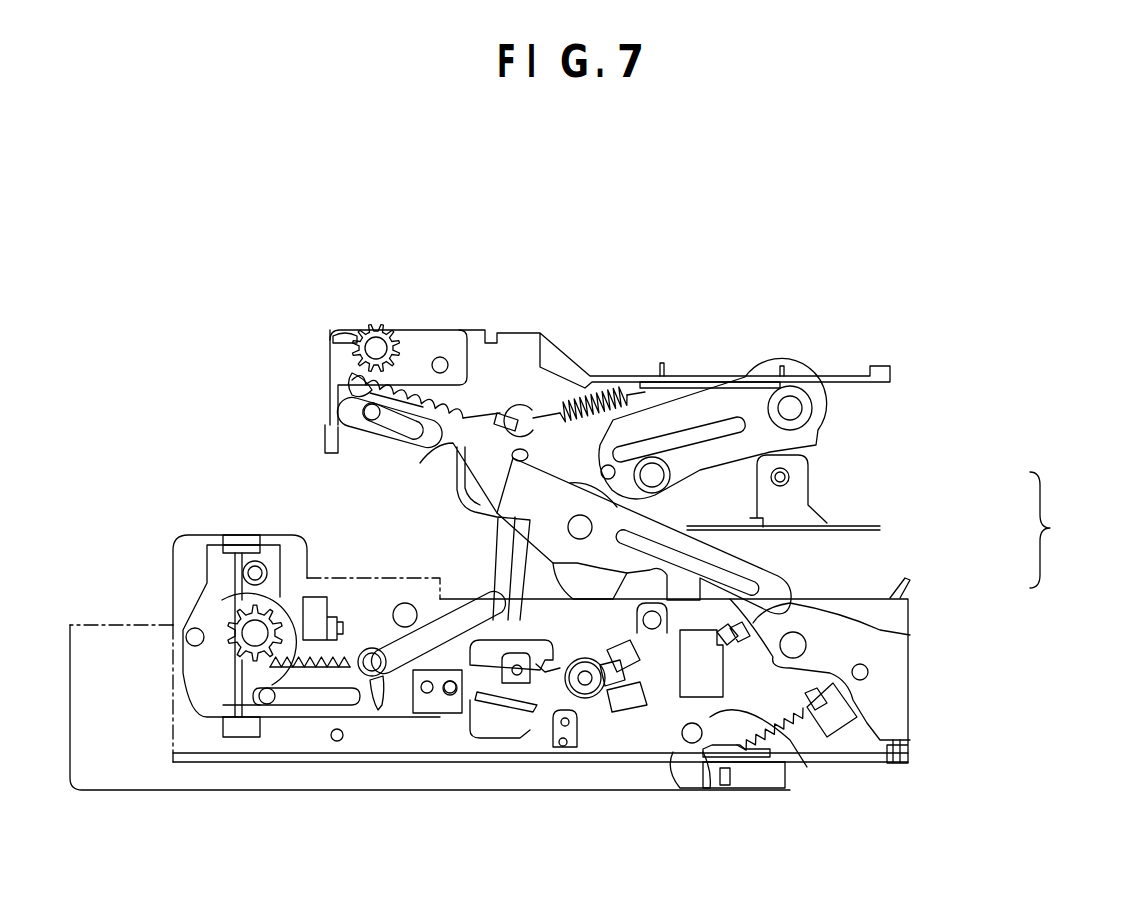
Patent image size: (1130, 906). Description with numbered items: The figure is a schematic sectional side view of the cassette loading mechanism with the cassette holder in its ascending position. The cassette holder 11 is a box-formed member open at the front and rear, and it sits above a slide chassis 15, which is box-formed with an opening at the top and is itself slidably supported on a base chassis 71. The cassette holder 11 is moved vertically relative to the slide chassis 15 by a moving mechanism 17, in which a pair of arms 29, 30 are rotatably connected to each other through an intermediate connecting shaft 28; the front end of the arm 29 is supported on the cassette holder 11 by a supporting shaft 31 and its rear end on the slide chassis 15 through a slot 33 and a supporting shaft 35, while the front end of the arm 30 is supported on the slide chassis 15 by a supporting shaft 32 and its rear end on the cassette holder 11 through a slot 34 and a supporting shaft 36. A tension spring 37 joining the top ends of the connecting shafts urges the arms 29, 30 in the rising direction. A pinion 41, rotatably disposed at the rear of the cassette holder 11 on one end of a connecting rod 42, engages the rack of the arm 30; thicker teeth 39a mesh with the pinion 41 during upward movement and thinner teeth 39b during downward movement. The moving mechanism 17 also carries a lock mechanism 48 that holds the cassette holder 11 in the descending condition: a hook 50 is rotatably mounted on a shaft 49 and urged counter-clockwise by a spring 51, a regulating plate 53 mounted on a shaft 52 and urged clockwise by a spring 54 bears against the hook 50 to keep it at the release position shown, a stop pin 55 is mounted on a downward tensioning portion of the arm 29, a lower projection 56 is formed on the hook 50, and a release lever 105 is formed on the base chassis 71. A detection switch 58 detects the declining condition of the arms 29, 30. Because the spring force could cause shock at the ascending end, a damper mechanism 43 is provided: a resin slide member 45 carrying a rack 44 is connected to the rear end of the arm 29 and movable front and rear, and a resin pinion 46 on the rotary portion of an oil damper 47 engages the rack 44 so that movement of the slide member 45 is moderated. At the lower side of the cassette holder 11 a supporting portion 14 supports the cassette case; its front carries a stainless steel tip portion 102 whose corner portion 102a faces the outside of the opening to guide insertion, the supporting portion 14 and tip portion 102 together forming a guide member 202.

The cassette holder 11 is at (518, 332).
The supporting portion 14 is at (820, 535).
The slide chassis 15 is at (273, 743).
The moving mechanism 17 is at (279, 442).
The intermediate connecting shaft 28 is at (573, 527).
The arm 29 is at (695, 412).
The arm 30 is at (780, 578).
The supporting shaft 31 is at (791, 405).
The supporting shaft 32 is at (793, 645).
The slot 33 is at (400, 700).
The slot 34 is at (403, 438).
The supporting shaft 35 is at (370, 680).
The supporting shaft 36 is at (364, 410).
The spring 37 is at (623, 390).
The teeth 39a is at (367, 387).
The teeth 39b is at (390, 420).
The pinion 41 is at (374, 326).
The connecting rod 42 is at (365, 328).
The damper mechanism 43 is at (177, 500).
The rack 44 is at (350, 660).
The slide member 45 is at (318, 725).
The pinion 46 is at (233, 645).
The oil damper 47 is at (223, 620).
The lock mechanism 48 is at (671, 812).
The shaft 49 is at (693, 745).
The hook 50 is at (783, 720).
The spring 51 is at (830, 720).
The shaft 52 is at (585, 682).
The regulating plate 53 is at (670, 683).
The spring 54 is at (540, 680).
The stop pin 55 is at (657, 473).
The lower projection 56 is at (703, 783).
The detection switch 58 is at (462, 700).
The base chassis 71 is at (80, 733).
The tip portion 102 is at (880, 523).
The corner portion 102a is at (880, 529).
The release lever 105 is at (733, 783).
The guide member 202 is at (1075, 530).